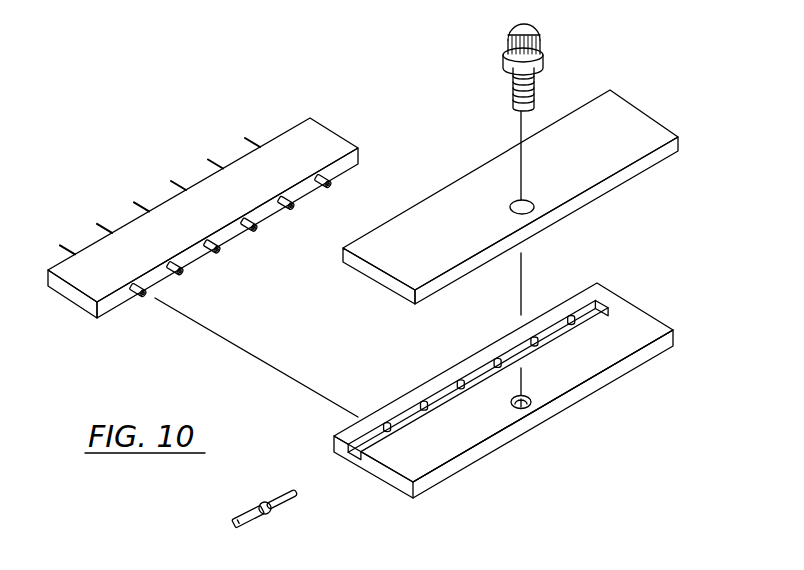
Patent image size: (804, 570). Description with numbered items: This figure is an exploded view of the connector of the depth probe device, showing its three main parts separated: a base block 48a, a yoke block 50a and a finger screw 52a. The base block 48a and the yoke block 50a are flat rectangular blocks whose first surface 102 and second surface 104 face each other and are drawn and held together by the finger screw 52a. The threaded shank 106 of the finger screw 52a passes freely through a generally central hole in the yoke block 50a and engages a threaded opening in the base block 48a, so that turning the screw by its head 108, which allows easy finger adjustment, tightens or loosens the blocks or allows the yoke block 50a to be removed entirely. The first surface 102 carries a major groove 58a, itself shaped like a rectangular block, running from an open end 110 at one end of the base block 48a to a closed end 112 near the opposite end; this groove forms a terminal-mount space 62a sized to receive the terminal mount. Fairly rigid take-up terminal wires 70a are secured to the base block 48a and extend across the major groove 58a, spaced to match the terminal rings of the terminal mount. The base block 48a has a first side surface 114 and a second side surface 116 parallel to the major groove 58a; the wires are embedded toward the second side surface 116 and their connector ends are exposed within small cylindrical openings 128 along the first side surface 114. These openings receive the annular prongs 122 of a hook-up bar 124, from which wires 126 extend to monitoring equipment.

The hook-up bar 124 is at (302, 137).
The wires 126 is at (147, 205).
The annular prongs 122 is at (214, 252).
The finger screw 52a is at (524, 66).
The knurled screw head 108 is at (508, 45).
The shank 106 is at (536, 90).
The second surface 104 is at (519, 209).
The yoke block 50a is at (402, 258).
The base block 48a is at (501, 397).
The first surface 102 is at (483, 397).
The first side surface 114 is at (335, 433).
The second side surface 116 is at (448, 472).
The major groove 58a is at (506, 397).
The terminal-mount space 62a is at (377, 484).
The open end 110 is at (357, 460).
The closed end 112 is at (605, 307).
The take-up terminal 70a is at (479, 374).
The small cylindrical openings 128 is at (427, 404).